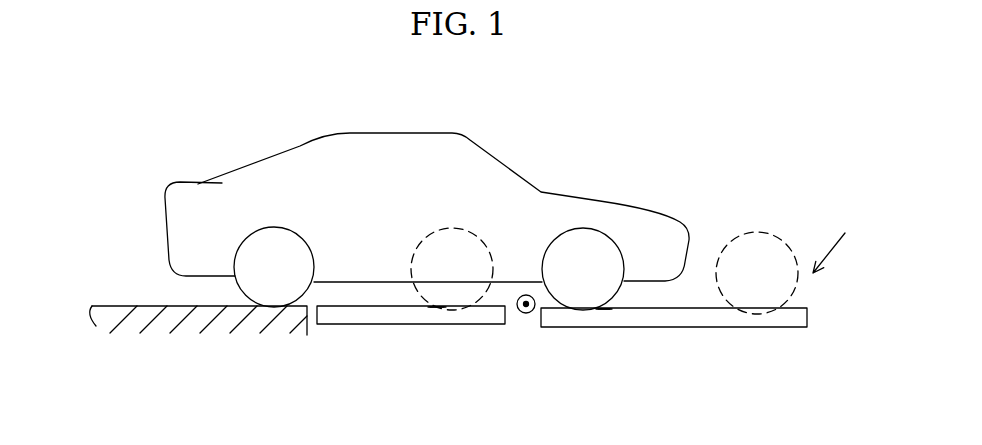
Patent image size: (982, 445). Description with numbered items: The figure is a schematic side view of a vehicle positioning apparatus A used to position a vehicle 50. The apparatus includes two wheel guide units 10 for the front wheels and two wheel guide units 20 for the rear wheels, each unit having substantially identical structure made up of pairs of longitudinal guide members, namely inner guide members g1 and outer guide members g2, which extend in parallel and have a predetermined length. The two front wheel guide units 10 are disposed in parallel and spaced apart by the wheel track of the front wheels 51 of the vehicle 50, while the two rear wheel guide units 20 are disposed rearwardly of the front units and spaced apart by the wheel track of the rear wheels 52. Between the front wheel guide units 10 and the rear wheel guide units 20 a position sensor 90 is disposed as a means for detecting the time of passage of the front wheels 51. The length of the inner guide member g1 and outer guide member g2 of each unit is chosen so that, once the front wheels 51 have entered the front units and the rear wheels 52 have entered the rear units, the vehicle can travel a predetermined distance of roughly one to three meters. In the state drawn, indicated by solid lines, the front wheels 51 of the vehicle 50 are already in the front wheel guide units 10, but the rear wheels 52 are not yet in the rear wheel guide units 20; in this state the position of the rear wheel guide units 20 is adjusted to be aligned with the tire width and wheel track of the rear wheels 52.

The vehicle 50 is at (515, 162).
The rear wheels 52 is at (268, 247).
The front wheels 51 is at (570, 245).
The position sensor 90 is at (523, 292).
The wheel guide units for the rear wheels 20 is at (385, 332).
The wheel guide units for the front wheels 10 is at (648, 333).
The outer guide members g2 is at (437, 314).
The inner guide members g1 is at (520, 308).
The vehicle positioning apparatus A is at (833, 239).